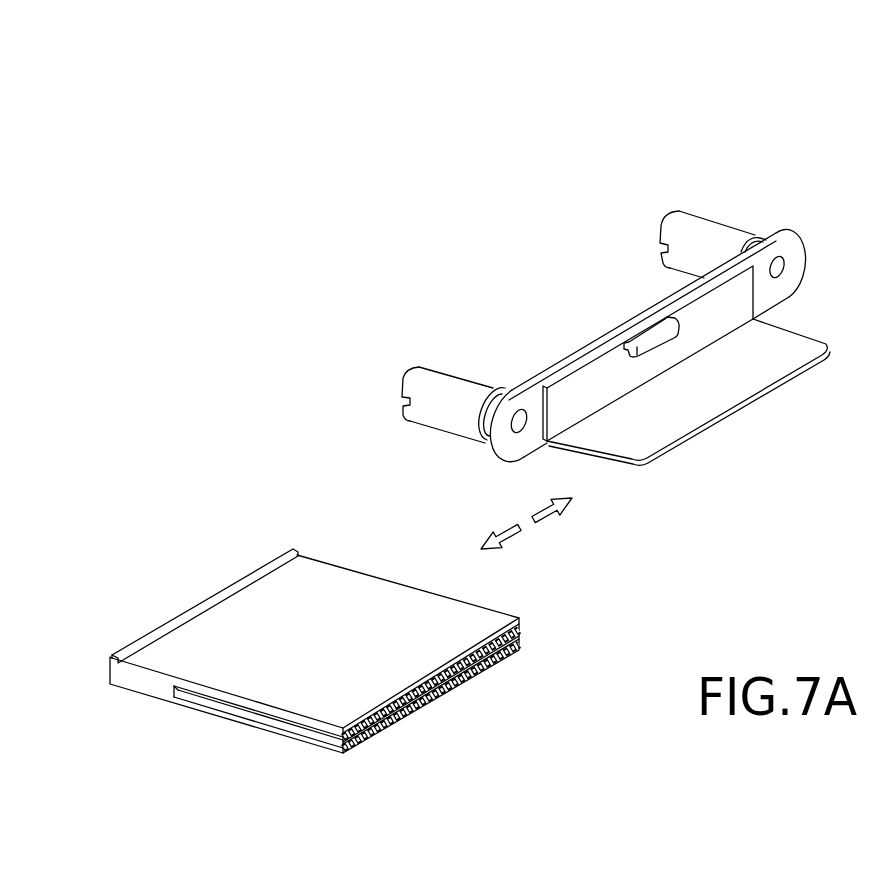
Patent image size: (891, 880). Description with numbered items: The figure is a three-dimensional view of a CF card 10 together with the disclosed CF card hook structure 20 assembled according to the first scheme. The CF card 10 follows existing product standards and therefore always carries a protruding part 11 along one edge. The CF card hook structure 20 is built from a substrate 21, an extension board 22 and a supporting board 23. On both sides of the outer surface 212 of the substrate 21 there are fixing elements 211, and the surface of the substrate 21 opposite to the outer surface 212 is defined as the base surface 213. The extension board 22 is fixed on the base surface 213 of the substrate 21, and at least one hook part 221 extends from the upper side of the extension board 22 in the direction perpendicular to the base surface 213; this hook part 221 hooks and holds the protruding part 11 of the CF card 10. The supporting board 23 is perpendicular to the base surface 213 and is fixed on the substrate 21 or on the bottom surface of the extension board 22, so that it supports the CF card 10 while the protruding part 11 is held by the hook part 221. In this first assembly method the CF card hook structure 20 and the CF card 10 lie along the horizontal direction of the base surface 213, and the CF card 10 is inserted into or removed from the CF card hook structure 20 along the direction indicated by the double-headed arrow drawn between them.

The CF card hook structure 20 is at (786, 156).
The substrate 21 is at (668, 294).
The fixing elements 211 is at (447, 387).
The outer surface 212 is at (538, 366).
The base surface 213 is at (773, 298).
The extension board 22 is at (610, 350).
The hook part 221 is at (649, 333).
The supporting board 23 is at (647, 420).
The CF card 10 is at (370, 731).
The protruding part 11 is at (205, 600).